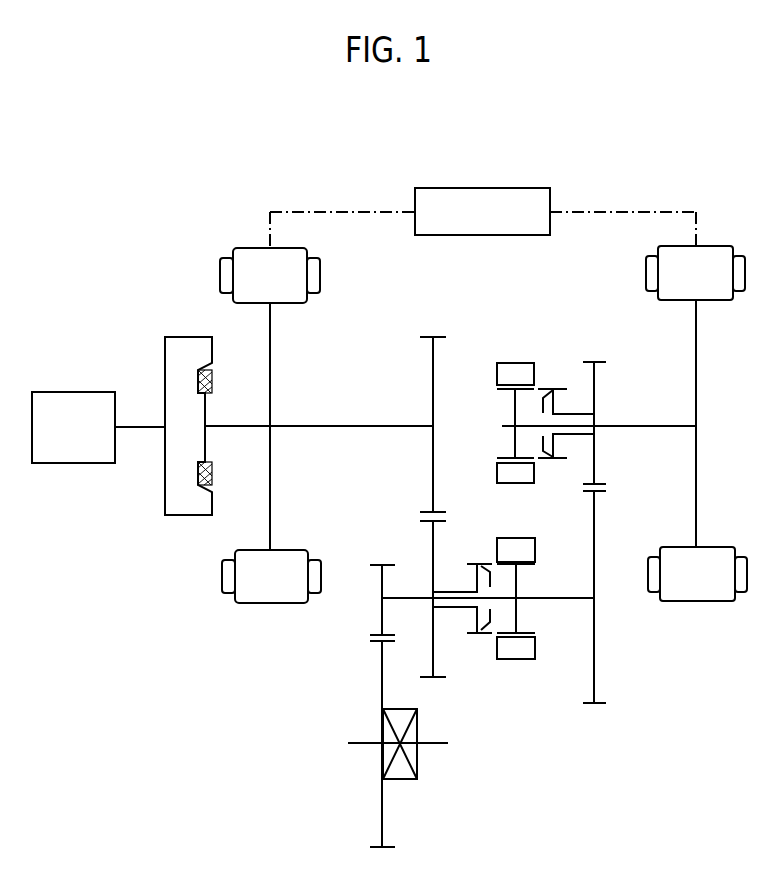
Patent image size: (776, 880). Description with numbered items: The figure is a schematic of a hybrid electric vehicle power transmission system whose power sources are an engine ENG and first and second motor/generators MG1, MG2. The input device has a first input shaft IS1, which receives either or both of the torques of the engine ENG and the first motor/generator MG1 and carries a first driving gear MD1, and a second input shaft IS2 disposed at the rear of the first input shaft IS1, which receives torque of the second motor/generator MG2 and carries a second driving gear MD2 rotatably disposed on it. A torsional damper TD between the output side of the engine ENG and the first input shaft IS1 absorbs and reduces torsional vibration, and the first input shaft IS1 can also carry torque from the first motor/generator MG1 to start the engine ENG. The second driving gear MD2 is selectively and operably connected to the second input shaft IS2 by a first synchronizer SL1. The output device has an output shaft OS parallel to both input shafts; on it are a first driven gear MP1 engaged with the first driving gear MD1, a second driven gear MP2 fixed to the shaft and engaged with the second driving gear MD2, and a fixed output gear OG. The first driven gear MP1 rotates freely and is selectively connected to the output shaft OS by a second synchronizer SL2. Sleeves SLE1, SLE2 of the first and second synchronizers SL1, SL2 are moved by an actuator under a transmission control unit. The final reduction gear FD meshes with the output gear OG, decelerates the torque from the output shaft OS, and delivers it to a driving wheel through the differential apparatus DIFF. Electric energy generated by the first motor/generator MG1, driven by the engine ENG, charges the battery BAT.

The battery BAT is at (483, 218).
The first motor/generator MG1 is at (270, 425).
The second motor/generator MG2 is at (696, 423).
The engine ENG is at (98, 427).
The torsional damper TD is at (197, 374).
The first input shaft IS1 is at (352, 428).
The second input shaft IS2 is at (652, 428).
The first driving gear MD1 is at (433, 375).
The second driving gear MD2 is at (596, 385).
The first driven gear MP1 is at (433, 538).
The second driven gear MP2 is at (596, 520).
The sleeve SLE1 is at (500, 362).
The sleeve SLE2 is at (530, 661).
The first synchronizer SL1 is at (522, 353).
The second synchronizer SL2 is at (498, 678).
The output shaft OS is at (562, 600).
The output gear OG is at (380, 585).
The final reduction gear FD is at (382, 680).
The differential apparatus DIFF is at (418, 768).